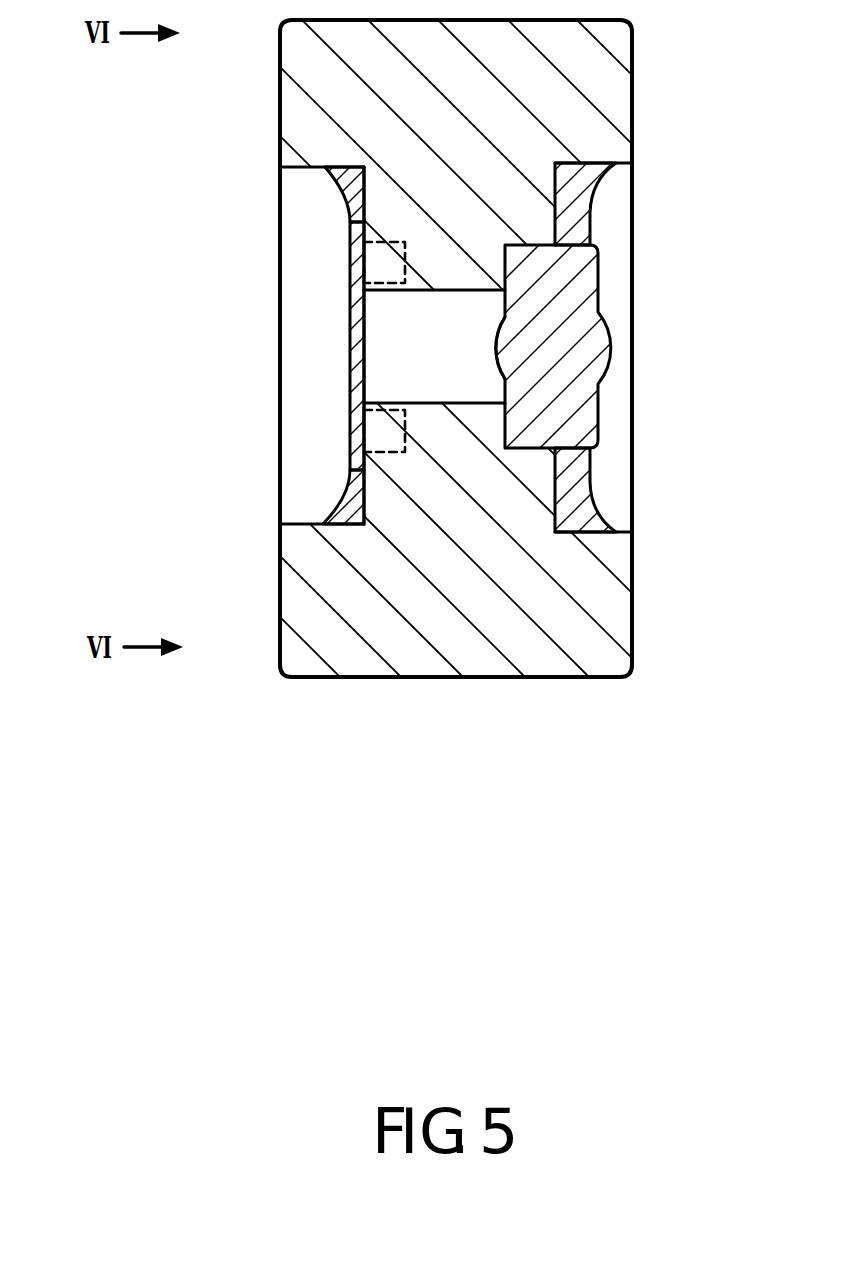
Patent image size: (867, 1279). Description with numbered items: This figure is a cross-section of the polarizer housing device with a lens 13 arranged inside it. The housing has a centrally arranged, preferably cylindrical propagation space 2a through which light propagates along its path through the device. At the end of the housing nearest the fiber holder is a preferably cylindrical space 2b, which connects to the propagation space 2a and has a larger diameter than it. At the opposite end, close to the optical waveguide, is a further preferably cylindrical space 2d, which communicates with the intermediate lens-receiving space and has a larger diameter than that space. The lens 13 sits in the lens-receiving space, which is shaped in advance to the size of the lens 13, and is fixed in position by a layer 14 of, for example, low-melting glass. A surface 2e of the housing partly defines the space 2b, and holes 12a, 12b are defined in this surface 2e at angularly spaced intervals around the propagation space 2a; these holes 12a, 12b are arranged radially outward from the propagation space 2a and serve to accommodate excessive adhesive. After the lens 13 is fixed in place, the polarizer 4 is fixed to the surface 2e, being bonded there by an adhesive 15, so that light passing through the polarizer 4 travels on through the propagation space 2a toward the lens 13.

The propagation space 2a is at (481, 363).
The space 2b is at (292, 337).
The space 2d is at (620, 446).
The surface 2e is at (368, 190).
The polarizer 4 is at (348, 382).
The hole 12a is at (384, 267).
The hole 12b is at (384, 432).
The lens 13 is at (587, 285).
The layer 14 is at (597, 173).
The adhesive 15 is at (348, 186).